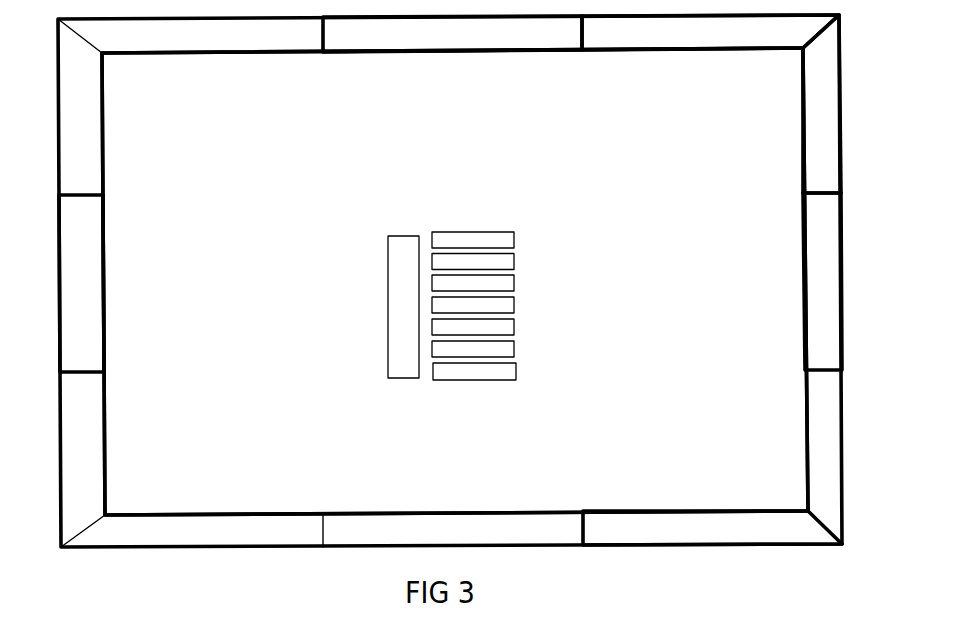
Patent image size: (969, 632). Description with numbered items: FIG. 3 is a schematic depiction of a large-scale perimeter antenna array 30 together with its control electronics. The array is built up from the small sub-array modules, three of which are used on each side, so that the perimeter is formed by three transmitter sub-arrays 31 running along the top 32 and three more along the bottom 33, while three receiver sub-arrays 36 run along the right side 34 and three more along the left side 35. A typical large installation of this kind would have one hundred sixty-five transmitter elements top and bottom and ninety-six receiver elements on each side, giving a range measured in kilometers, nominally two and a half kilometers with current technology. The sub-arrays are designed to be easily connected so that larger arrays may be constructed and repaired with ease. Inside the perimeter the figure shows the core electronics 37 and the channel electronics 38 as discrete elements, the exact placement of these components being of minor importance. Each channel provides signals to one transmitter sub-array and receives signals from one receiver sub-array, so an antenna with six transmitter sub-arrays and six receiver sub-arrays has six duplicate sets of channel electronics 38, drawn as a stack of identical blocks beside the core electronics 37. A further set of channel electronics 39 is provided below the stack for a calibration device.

The display device 30 is at (455, 184).
The transmitter sub-arrays 31 is at (695, 28).
The top 32 is at (358, 53).
The bottom 33 is at (627, 509).
The right side 34 is at (805, 323).
The left side 35 is at (104, 325).
The receiver sub-arrays 36 is at (813, 82).
The core electronics 37 is at (388, 279).
The channel electronics 38 is at (514, 287).
The further channel electronics 39 is at (516, 370).